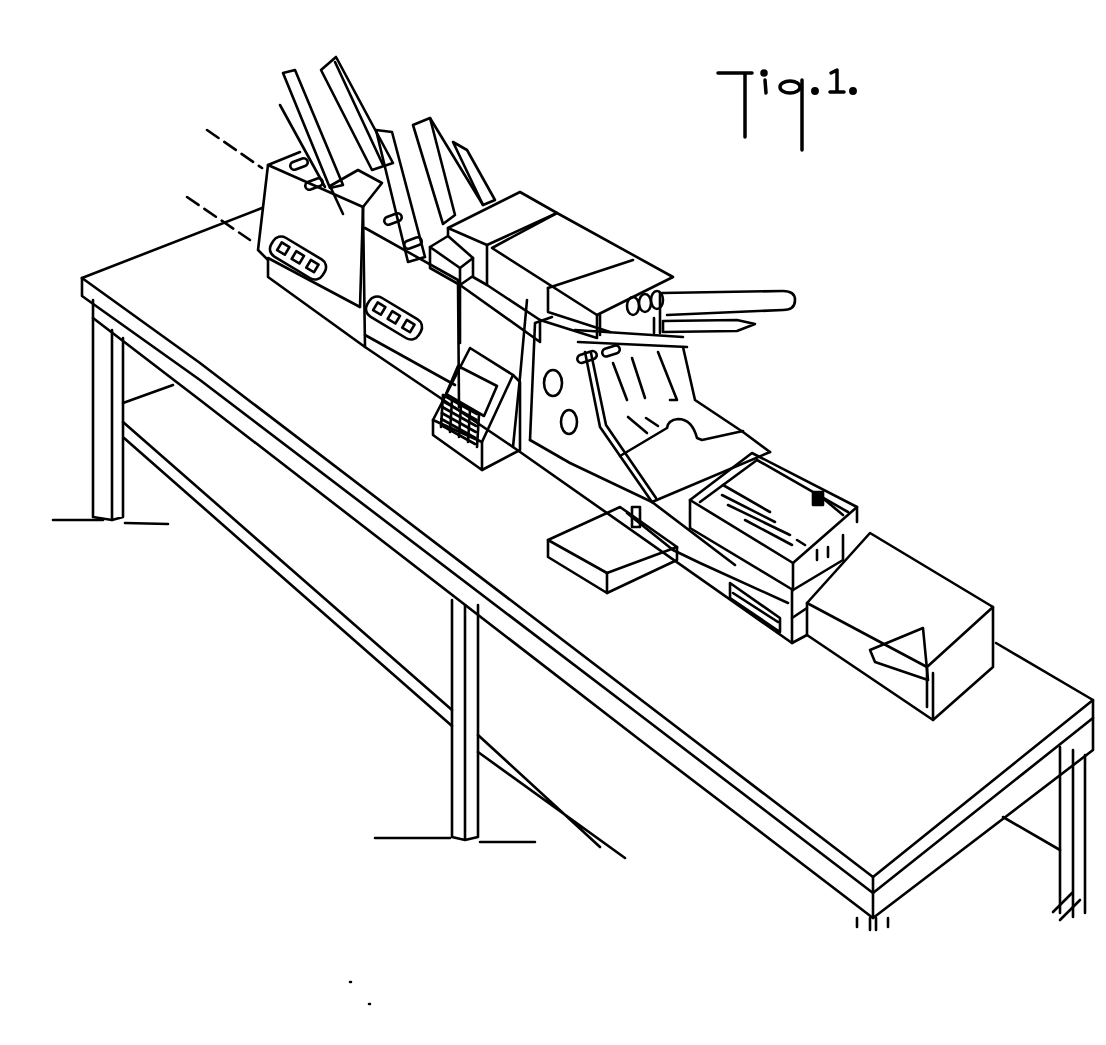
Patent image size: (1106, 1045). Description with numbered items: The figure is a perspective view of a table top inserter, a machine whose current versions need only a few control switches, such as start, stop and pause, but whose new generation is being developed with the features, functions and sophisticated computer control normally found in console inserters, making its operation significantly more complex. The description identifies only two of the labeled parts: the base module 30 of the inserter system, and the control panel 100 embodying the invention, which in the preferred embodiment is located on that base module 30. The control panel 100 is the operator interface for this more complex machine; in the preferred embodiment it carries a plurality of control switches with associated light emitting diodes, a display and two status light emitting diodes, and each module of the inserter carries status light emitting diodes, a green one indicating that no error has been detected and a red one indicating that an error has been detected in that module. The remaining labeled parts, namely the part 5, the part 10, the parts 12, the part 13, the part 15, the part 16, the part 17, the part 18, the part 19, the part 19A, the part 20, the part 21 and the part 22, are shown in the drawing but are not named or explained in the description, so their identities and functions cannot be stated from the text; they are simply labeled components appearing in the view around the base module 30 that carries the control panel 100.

The table 5 is at (1073, 688).
The mail processing system 10 is at (738, 259).
The feeder trays 12 is at (373, 105).
The housing 13 is at (610, 242).
The display screen 15 is at (492, 358).
The keyboard 16 is at (465, 448).
The transport arm 17 is at (775, 287).
The guide panel 18 is at (697, 372).
The exit plate 19 is at (752, 430).
The output tray 19A is at (630, 578).
The cover 20 is at (817, 475).
The output bin 21 is at (943, 575).
The feeder station 22 is at (228, 142).
The base module 30 is at (558, 485).
The control panel 100 is at (430, 412).